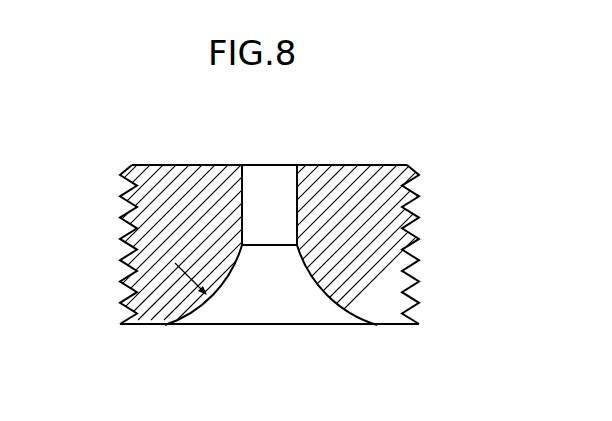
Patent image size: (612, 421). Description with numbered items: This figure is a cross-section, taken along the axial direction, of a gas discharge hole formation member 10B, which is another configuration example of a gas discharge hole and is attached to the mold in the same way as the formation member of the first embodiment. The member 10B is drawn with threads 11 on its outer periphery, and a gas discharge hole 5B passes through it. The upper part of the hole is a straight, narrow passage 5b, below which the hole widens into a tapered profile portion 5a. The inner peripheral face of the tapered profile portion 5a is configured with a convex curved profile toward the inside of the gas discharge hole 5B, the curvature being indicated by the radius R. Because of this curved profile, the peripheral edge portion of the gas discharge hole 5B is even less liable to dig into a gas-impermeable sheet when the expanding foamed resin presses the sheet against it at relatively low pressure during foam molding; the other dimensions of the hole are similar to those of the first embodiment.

The gas discharge hole formation member 10B is at (172, 165).
The thread 11 is at (120, 196).
The upper hole portion 5b is at (297, 183).
The tapered profile portion 5a is at (319, 300).
The radius of curved surface R is at (185, 277).
The gas discharge hole 5B is at (253, 319).